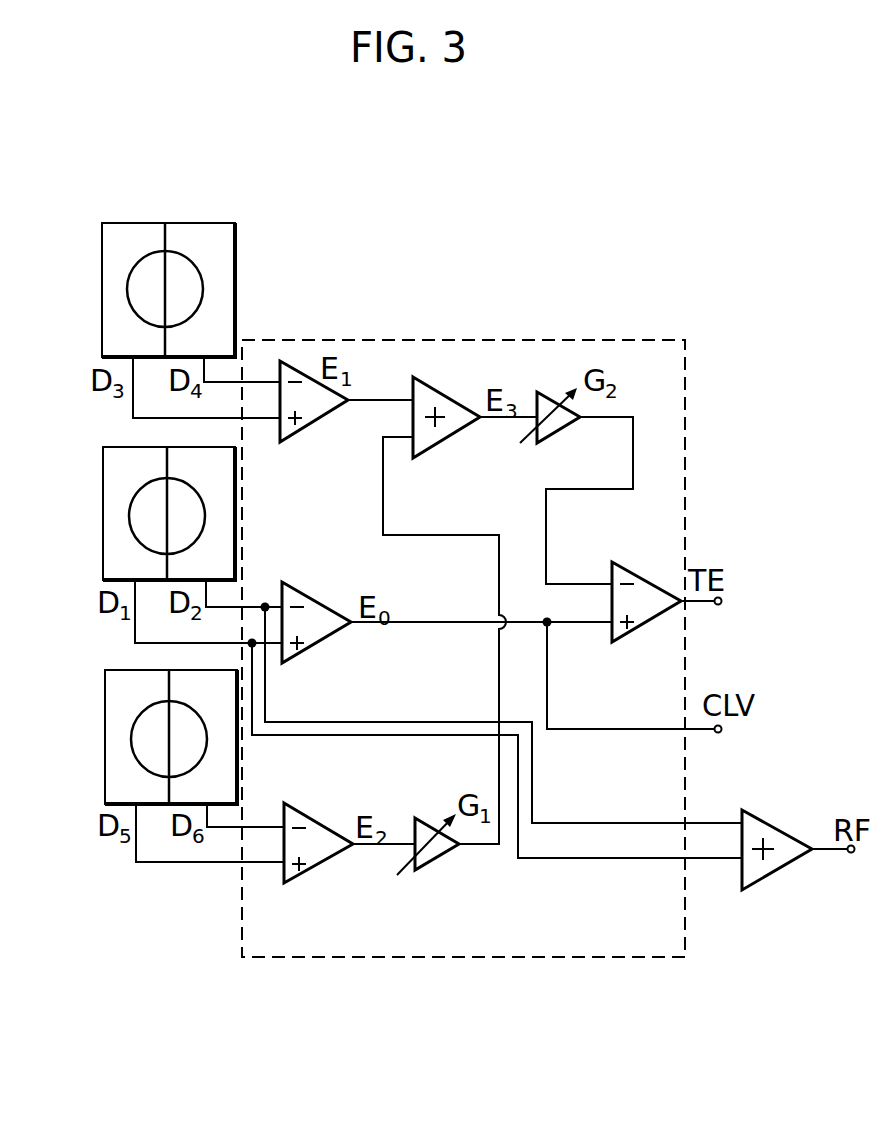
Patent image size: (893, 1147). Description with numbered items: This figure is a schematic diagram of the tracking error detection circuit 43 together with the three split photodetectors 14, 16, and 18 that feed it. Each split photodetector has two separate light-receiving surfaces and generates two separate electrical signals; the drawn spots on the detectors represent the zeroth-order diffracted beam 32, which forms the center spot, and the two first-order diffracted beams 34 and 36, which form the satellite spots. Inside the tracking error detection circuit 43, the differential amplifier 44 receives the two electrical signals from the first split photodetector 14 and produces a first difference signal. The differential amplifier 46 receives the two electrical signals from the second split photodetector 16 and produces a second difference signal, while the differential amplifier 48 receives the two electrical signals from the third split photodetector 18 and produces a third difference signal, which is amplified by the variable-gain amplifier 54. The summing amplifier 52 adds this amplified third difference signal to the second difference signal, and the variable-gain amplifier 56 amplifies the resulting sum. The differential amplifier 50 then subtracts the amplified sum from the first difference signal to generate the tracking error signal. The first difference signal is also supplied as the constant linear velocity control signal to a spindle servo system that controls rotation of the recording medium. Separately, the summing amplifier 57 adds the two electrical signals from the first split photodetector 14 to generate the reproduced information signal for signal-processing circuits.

The first split photodetector 14 is at (103, 569).
The second split photodetector 16 is at (102, 338).
The third split photodetector 18 is at (105, 787).
The zeroth-order diffracted beam 32 is at (129, 516).
The first-order diffracted beam 34 is at (127, 289).
The first-order diffracted beam 36 is at (131, 739).
The tracking error detection circuit 43 is at (447, 340).
The differential amplifier 44 is at (325, 650).
The differential amplifier 46 is at (316, 440).
The differential amplifier 48 is at (323, 868).
The differential amplifier 50 is at (636, 632).
The summing amplifier 52 is at (446, 440).
The variable-gain amplifier 54 is at (437, 858).
The variable-gain amplifier 56 is at (565, 433).
The summing amplifier 57 is at (785, 866).